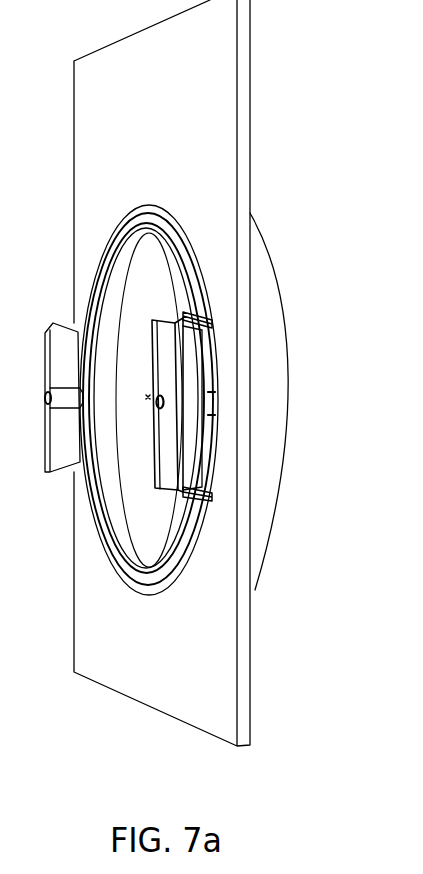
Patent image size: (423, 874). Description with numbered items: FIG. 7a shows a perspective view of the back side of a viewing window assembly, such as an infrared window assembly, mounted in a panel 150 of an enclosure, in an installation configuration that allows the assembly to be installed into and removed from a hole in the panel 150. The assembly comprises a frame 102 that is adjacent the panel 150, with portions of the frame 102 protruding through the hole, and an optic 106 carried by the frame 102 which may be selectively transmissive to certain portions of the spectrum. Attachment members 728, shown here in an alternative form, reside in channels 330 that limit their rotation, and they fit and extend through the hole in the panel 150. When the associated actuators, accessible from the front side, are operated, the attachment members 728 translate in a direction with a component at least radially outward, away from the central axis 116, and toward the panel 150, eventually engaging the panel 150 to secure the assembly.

The panel 150 is at (181, 373).
The frame 102 is at (186, 250).
The channels 330 is at (210, 352).
The optic 106 is at (176, 397).
The central axis 116 is at (165, 400).
The attachment members 728 is at (168, 433).